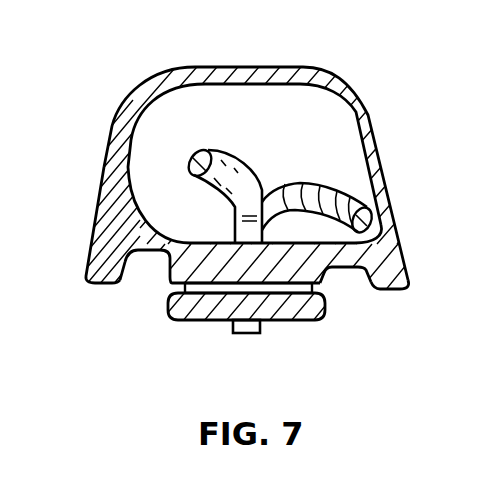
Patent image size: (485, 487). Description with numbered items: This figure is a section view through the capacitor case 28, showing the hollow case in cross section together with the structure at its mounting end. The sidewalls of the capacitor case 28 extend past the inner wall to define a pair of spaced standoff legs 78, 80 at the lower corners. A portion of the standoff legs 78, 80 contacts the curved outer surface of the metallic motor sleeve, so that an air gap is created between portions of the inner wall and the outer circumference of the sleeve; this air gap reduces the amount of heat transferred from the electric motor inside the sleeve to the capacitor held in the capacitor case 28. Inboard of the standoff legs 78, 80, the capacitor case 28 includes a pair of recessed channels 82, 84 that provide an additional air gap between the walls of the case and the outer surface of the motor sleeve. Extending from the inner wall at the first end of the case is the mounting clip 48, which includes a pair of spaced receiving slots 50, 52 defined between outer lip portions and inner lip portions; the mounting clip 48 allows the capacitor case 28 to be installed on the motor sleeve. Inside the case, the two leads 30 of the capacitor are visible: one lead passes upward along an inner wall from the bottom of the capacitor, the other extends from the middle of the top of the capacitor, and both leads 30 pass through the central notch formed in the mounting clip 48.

The capacitor case 28 is at (380, 100).
The leads 30 is at (255, 173).
The standoff leg 78 is at (88, 281).
The standoff leg 80 is at (393, 265).
The recessed channel 82 is at (147, 270).
The recessed channel 84 is at (356, 279).
The receiving slot 50 is at (181, 288).
The receiving slot 52 is at (315, 288).
The mounting clip 48 is at (298, 330).